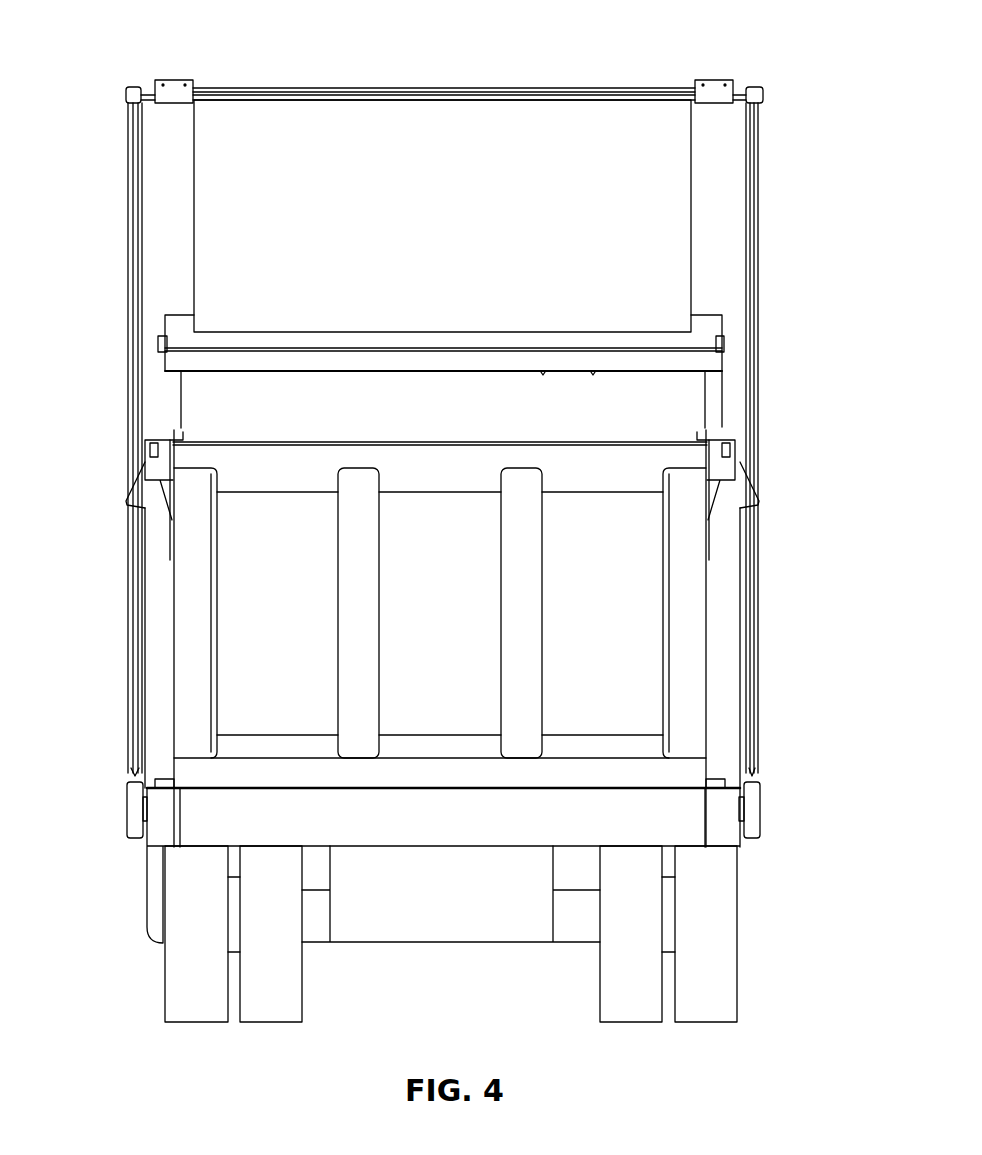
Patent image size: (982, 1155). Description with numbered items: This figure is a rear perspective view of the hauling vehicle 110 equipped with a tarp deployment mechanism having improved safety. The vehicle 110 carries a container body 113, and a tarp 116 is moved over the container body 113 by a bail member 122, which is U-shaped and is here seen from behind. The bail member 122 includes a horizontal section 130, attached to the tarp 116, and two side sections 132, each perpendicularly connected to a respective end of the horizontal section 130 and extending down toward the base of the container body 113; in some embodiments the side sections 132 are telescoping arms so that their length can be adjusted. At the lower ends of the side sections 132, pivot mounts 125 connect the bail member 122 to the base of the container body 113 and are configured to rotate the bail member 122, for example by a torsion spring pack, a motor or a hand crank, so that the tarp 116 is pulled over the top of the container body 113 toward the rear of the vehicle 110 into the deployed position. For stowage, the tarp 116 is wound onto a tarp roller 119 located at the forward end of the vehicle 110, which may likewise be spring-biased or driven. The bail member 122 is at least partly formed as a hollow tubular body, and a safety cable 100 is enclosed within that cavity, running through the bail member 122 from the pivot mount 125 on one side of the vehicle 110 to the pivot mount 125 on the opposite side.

The vehicle 110 is at (93, 62).
The safety cable 100 is at (321, 96).
The horizontal section 130 is at (470, 90).
The bail member 122 is at (634, 80).
The side sections 132 is at (128, 145).
The tarp 116 is at (228, 240).
The tarp roller 119 is at (722, 340).
The container body 113 is at (684, 601).
The pivot mounts 125 is at (123, 802).